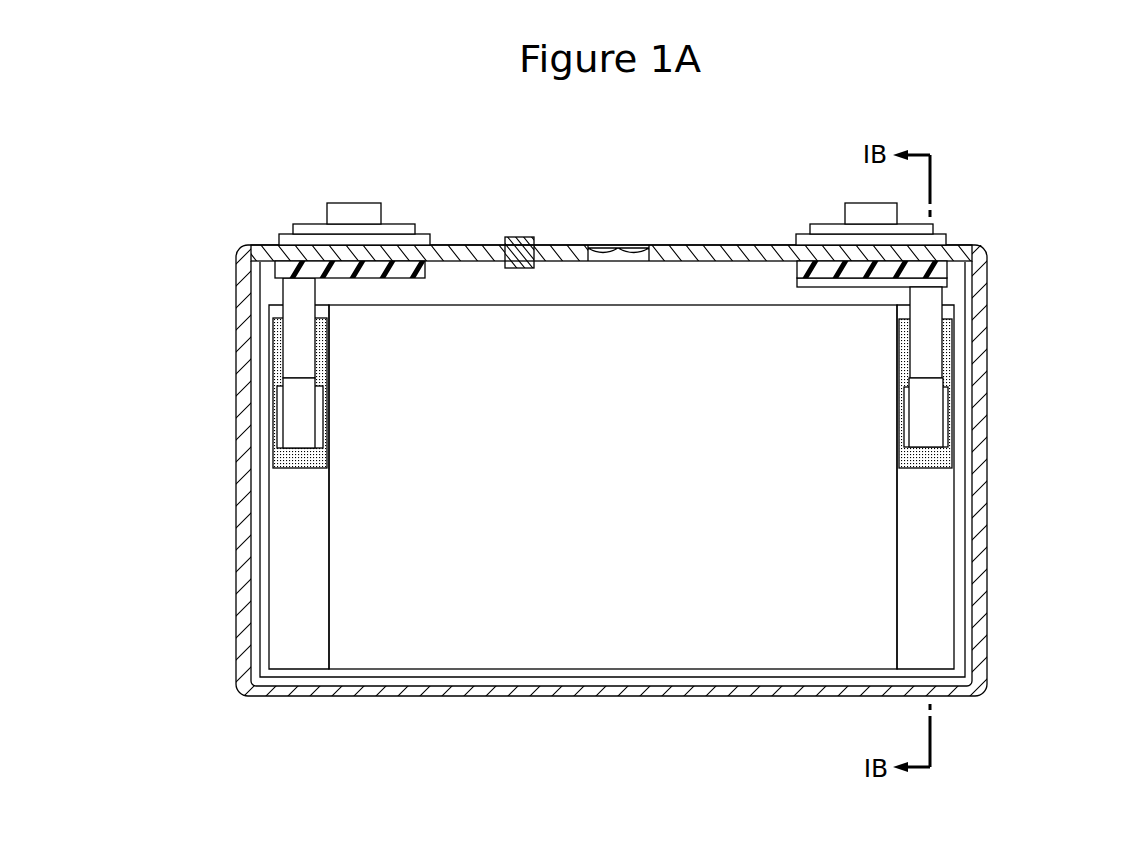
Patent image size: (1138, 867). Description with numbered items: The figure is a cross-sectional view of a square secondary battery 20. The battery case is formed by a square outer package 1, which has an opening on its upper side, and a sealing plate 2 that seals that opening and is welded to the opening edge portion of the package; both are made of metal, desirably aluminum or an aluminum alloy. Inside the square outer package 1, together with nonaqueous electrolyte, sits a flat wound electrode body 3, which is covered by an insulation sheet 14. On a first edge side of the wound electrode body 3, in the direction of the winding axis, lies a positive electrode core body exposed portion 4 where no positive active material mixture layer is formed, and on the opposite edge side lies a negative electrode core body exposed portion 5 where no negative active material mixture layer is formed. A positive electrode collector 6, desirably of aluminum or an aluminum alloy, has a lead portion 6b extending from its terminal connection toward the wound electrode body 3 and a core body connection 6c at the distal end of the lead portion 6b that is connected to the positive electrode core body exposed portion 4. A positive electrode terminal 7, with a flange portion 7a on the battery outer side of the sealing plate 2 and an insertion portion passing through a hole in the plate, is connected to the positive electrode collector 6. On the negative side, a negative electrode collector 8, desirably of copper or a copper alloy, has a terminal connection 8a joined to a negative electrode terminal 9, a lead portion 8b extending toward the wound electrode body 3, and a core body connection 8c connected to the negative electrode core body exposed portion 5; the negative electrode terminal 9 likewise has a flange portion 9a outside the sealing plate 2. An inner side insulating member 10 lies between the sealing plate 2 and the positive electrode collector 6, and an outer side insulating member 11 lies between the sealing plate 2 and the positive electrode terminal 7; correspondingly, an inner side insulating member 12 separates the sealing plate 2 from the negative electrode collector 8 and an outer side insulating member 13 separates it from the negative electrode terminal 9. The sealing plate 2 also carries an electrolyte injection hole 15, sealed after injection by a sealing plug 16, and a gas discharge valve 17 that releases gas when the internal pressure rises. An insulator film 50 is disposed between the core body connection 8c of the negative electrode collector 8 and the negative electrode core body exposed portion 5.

The square secondary battery 20 is at (473, 114).
The square outer package 1 is at (831, 695).
The sealing plate 2 is at (697, 250).
The wound electrode body 3 is at (562, 650).
The positive electrode core body exposed portion 4 is at (291, 659).
The negative electrode core body exposed portion 5 is at (938, 660).
The positive electrode collector 6 is at (225, 363).
The lead portion 6b is at (290, 340).
The core body connection 6c is at (290, 410).
The positive electrode terminal 7 is at (358, 208).
The flange portion 7a is at (306, 229).
The negative electrode collector 8 is at (948, 362).
The terminal connection 8a is at (945, 283).
The lead portion 8b is at (930, 340).
The core body connection 8c is at (987, 412).
The negative electrode terminal 9 is at (860, 210).
The flange portion 9a is at (827, 230).
The inner side insulating member 10 is at (288, 270).
The outer side insulating member 11 is at (283, 240).
The inner side insulating member 12 is at (942, 269).
The outer side insulating member 13 is at (787, 236).
The insulation sheet 14 is at (260, 588).
The electrolyte injection hole 15 is at (510, 242).
The sealing plug 16 is at (524, 241).
The gas discharge valve 17 is at (618, 250).
The insulator film 50 is at (285, 458).